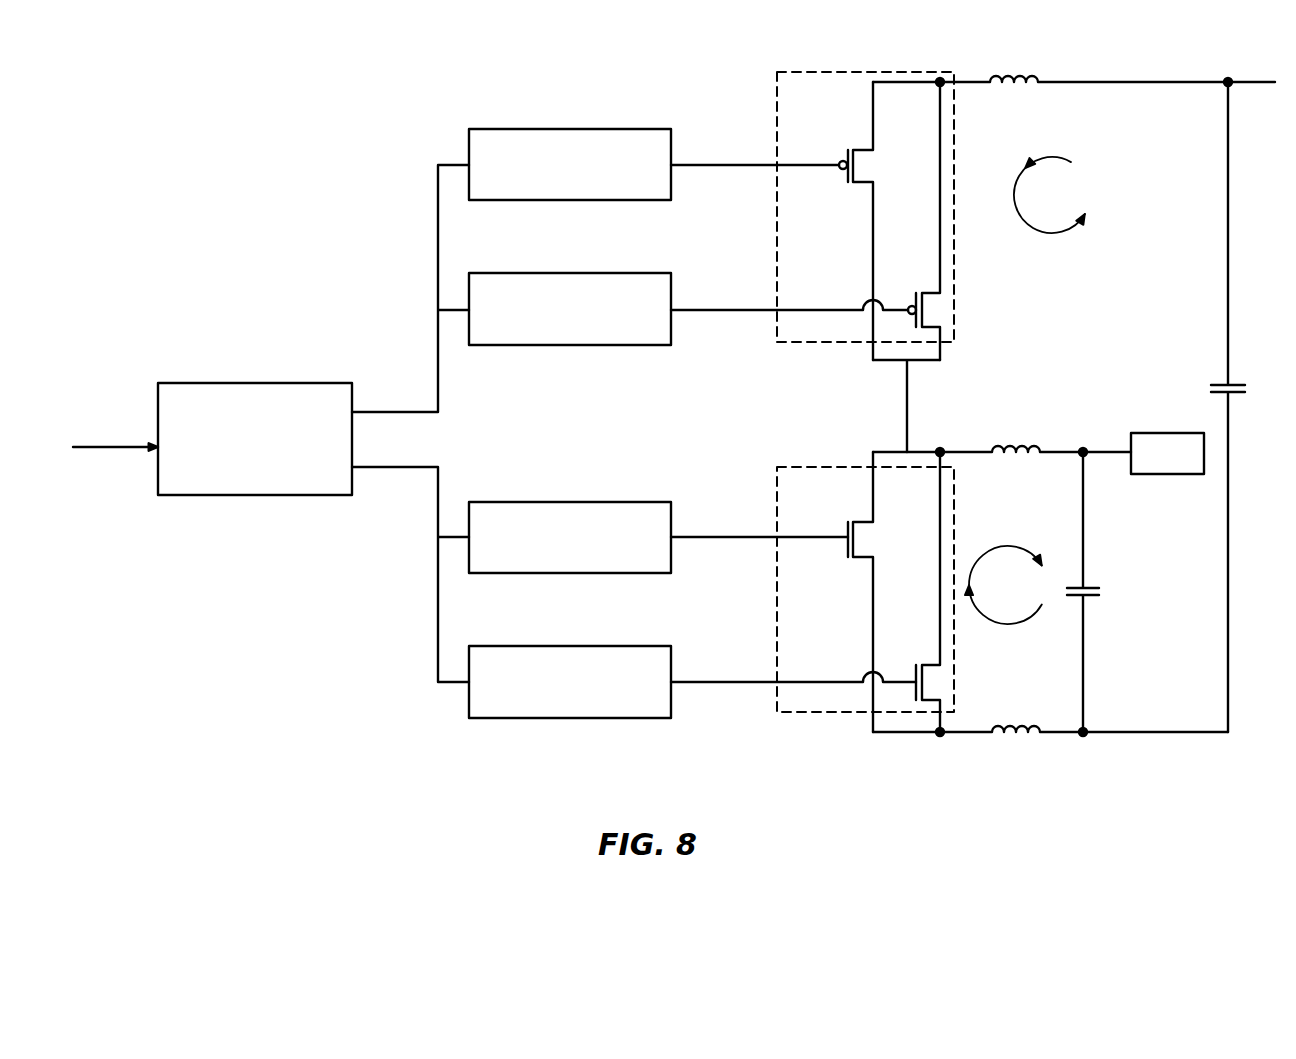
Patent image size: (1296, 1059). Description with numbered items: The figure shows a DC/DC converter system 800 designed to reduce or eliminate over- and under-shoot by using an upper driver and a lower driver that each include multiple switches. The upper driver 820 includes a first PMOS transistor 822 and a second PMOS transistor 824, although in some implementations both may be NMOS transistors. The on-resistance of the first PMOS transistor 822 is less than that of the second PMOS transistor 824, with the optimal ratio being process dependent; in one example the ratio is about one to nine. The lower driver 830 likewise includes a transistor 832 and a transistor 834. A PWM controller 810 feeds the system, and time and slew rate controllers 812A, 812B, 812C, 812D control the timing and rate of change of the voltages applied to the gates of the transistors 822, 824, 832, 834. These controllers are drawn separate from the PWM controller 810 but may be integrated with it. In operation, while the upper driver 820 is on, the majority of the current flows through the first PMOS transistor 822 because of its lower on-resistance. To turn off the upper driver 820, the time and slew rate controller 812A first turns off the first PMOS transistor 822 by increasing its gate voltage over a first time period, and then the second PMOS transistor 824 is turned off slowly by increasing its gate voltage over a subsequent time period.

The DC/DC converter system 800 is at (316, 74).
The PWM controller 810 is at (183, 382).
The time and slew rate controller 812A is at (557, 128).
The time and slew rate controller 812B is at (557, 272).
The time and slew rate controller 812C is at (557, 501).
The time and slew rate controller 812D is at (557, 645).
The upper driver 820 is at (797, 71).
The first PMOS transistor 822 is at (879, 159).
The second PMOS transistor 824 is at (940, 310).
The lower driver 830 is at (797, 466).
The transistor 832 is at (879, 531).
The transistor 834 is at (940, 682).